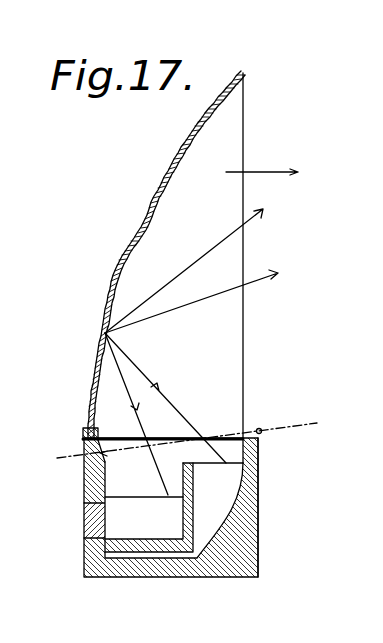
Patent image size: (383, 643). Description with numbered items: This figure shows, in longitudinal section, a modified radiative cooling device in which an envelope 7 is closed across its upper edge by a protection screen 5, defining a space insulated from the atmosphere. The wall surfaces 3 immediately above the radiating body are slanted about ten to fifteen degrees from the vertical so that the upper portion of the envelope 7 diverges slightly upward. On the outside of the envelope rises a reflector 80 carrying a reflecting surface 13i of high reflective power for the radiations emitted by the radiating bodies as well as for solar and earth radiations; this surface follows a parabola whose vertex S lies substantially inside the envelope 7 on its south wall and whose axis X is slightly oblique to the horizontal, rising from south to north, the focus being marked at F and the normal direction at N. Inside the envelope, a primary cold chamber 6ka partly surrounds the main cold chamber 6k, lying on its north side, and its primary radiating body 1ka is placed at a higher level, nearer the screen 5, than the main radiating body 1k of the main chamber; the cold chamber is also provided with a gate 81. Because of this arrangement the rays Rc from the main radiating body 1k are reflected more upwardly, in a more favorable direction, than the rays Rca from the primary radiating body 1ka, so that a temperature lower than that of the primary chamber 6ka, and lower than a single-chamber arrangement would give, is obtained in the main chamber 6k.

The reflector mirror 80 is at (126, 265).
The reflecting surface 13i is at (145, 228).
The normal direction N is at (262, 255).
The rays from the main radiating body Rc is at (198, 344).
The rays from the primary radiating body Rca is at (212, 360).
The envelope 7 is at (266, 493).
The wall surfaces 3 is at (258, 455).
The protection screen 5 is at (160, 438).
The gate 81 is at (84, 518).
The primary radiating body 1ka is at (154, 452).
The main radiating body 1k is at (125, 497).
The main cold chamber 6k is at (191, 502).
The primary cold chamber 6ka is at (213, 480).
The axis XX' of the parabola X is at (187, 431).
The focal point F is at (260, 419).
The vertex of the parabola S is at (112, 463).